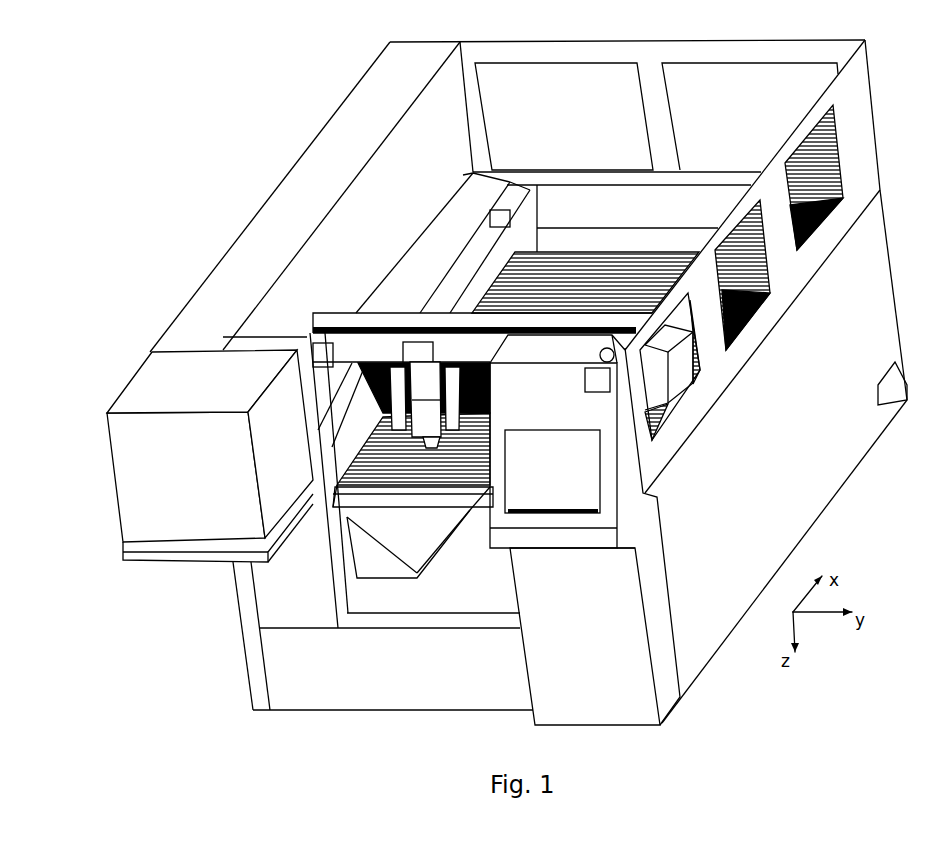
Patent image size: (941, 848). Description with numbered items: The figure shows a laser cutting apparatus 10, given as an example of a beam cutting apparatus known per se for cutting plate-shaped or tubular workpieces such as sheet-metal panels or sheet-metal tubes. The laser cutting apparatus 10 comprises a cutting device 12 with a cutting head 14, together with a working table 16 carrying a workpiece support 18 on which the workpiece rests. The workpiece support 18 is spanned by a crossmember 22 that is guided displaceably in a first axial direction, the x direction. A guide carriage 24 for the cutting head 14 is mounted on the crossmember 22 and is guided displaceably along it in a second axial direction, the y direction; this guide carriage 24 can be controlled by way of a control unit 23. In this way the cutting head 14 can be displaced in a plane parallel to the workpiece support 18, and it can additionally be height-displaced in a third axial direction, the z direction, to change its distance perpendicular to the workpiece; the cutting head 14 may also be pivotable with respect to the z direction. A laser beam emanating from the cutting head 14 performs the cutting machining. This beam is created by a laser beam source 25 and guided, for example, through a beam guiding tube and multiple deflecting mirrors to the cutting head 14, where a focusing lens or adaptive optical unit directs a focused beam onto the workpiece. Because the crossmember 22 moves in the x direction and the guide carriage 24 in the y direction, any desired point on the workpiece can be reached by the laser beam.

The laser cutting apparatus 10 is at (155, 90).
The cutting device 12 is at (330, 376).
The cutting head 14 is at (310, 340).
The working table 16 is at (360, 500).
The workpiece support 18 is at (370, 435).
The crossmember 22 is at (350, 313).
The control unit 23 is at (500, 517).
The guide carriage 24 is at (418, 352).
The laser beam source 25 is at (165, 472).